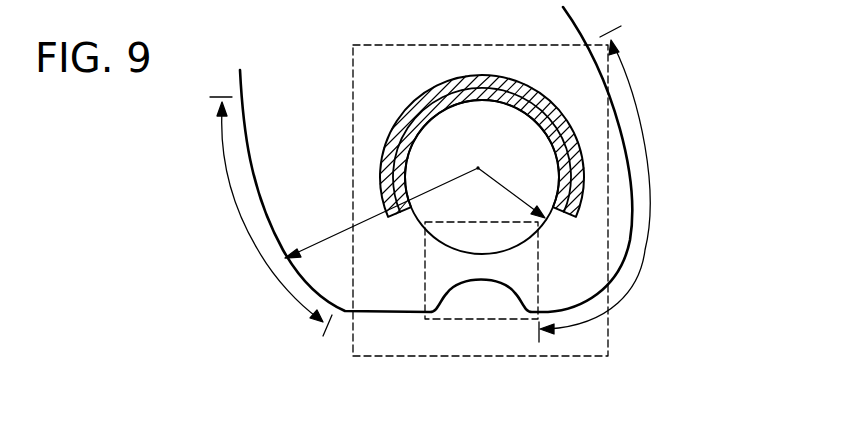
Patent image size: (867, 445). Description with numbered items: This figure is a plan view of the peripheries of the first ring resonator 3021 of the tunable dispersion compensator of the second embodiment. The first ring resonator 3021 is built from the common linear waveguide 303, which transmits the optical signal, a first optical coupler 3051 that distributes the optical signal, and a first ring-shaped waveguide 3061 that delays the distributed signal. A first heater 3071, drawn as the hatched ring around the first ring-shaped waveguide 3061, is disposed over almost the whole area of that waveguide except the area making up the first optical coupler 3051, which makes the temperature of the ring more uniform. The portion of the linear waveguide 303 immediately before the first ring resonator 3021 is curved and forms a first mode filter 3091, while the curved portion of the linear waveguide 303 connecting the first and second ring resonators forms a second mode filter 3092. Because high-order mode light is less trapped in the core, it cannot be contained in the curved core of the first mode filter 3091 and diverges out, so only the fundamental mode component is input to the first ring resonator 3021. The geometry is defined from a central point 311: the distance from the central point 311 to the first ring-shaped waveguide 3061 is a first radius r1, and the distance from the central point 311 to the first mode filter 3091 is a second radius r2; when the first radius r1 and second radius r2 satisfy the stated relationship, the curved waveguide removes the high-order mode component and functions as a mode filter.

The first ring resonator 3021 is at (352, 63).
The linear waveguide 303 is at (242, 108).
The first optical coupler 3051 is at (485, 320).
The first ring-shaped waveguide 3061 is at (418, 235).
The first heater 3071 is at (386, 138).
The central point 311 is at (478, 168).
The first mode filter 3091 is at (267, 216).
The second mode filter 3092 is at (618, 184).
The first radius r1 is at (511, 193).
The second radius r2 is at (381, 213).